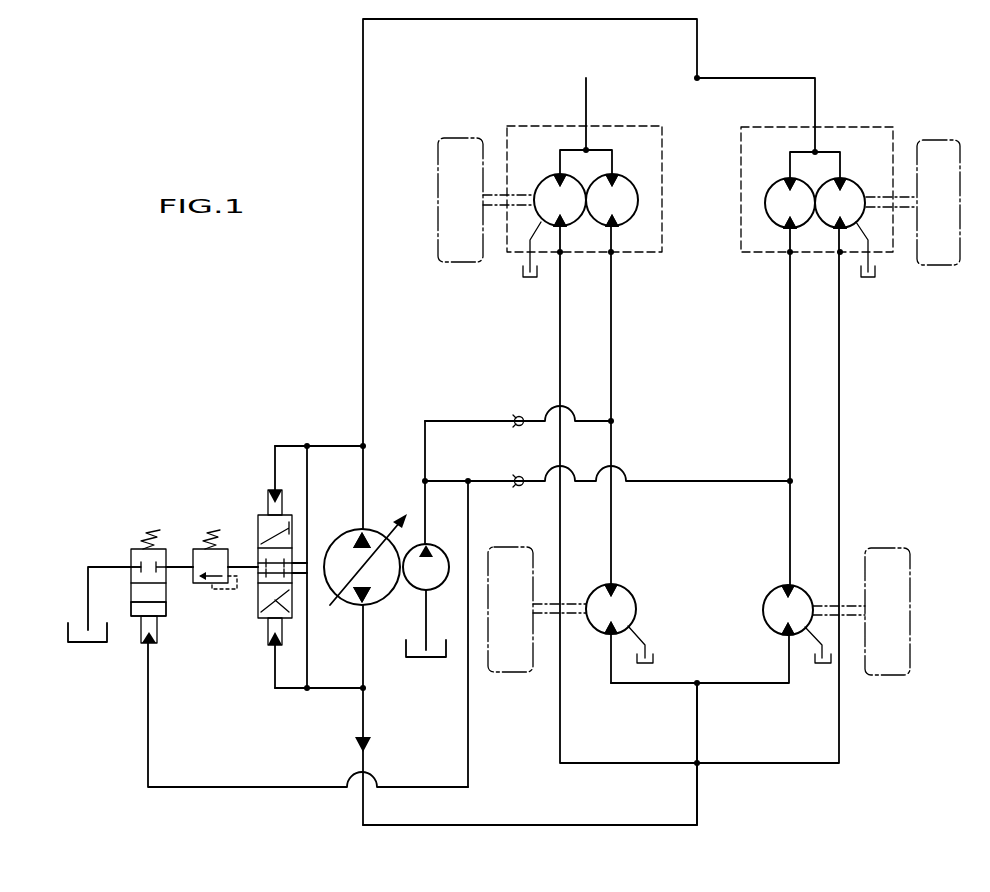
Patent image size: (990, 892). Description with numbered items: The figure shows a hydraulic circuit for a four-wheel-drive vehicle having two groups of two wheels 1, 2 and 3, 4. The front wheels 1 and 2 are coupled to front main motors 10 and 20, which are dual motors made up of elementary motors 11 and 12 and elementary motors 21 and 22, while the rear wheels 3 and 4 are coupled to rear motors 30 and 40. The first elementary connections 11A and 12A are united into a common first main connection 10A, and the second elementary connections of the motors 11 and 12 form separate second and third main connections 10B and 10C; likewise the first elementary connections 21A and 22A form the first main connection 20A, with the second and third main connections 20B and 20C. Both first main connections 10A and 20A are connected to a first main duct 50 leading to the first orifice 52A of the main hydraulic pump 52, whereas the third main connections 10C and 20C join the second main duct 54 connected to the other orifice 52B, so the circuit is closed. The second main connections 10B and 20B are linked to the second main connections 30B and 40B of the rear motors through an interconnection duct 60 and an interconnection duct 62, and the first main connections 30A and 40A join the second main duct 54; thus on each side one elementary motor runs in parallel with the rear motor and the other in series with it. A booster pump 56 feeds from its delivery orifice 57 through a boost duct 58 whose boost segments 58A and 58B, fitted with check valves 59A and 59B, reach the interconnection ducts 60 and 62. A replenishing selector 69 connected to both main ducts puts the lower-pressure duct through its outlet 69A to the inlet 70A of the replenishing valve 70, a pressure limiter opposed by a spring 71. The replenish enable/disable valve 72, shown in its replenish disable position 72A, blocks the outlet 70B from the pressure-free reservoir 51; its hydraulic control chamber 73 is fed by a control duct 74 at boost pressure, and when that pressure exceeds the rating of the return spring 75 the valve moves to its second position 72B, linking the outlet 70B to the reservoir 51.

The wheel 1 is at (455, 148).
The wheel 2 is at (928, 155).
The wheel 3 is at (516, 655).
The wheel 4 is at (884, 556).
The front main motor 10 is at (522, 124).
The first main connection 10A is at (586, 140).
The second main connection 10B is at (620, 228).
The third main connection 10C is at (565, 228).
The first elementary motor 11 is at (636, 198).
The first elementary connection 11A is at (615, 178).
The second elementary motor 12 is at (548, 190).
The first elementary connection 12A is at (553, 173).
The front main motor 20 is at (843, 127).
The first main connection 20A is at (815, 145).
The second main connection 20B is at (785, 229).
The third main connection 20C is at (835, 229).
The first elementary motor 21 is at (770, 205).
The first elementary connection 21A is at (782, 178).
The second elementary motor 22 is at (850, 215).
The first elementary connection 22A is at (834, 178).
The rear motor 30 is at (620, 608).
The first main connection 30A is at (607, 637).
The second main connection 30B is at (620, 583).
The rear motor 40 is at (772, 605).
The first main connection 40A is at (785, 633).
The second main connection 40B is at (787, 585).
The first main duct 50 is at (363, 87).
The pressure-free reservoir 51 is at (88, 642).
The main hydraulic pump 52 is at (376, 540).
The first orifice 52A is at (360, 528).
The second orifice 52B is at (360, 605).
The second main duct 54 is at (512, 825).
The booster pump 56 is at (440, 573).
The delivery orifice 57 is at (430, 545).
The boost duct 58 is at (424, 500).
The boost segment 58A is at (458, 420).
The boost segment 58B is at (488, 481).
The check valve 59A is at (520, 416).
The check valve 59B is at (520, 486).
The interconnection duct 60 is at (611, 335).
The interconnection duct 62 is at (789, 348).
The replenishing selector 69 is at (262, 508).
The outlet 69A is at (255, 568).
The replenishing valve 70 is at (190, 540).
The inlet 70A is at (230, 565).
The outlet 70B is at (195, 575).
The spring 71 is at (208, 530).
The replenish enable/disable valve 72 is at (130, 540).
The replenish disable position 72A is at (140, 558).
The second position 72B is at (132, 608).
The hydraulic control chamber 73 is at (152, 640).
The control duct 74 is at (260, 787).
The return spring 75 is at (155, 540).